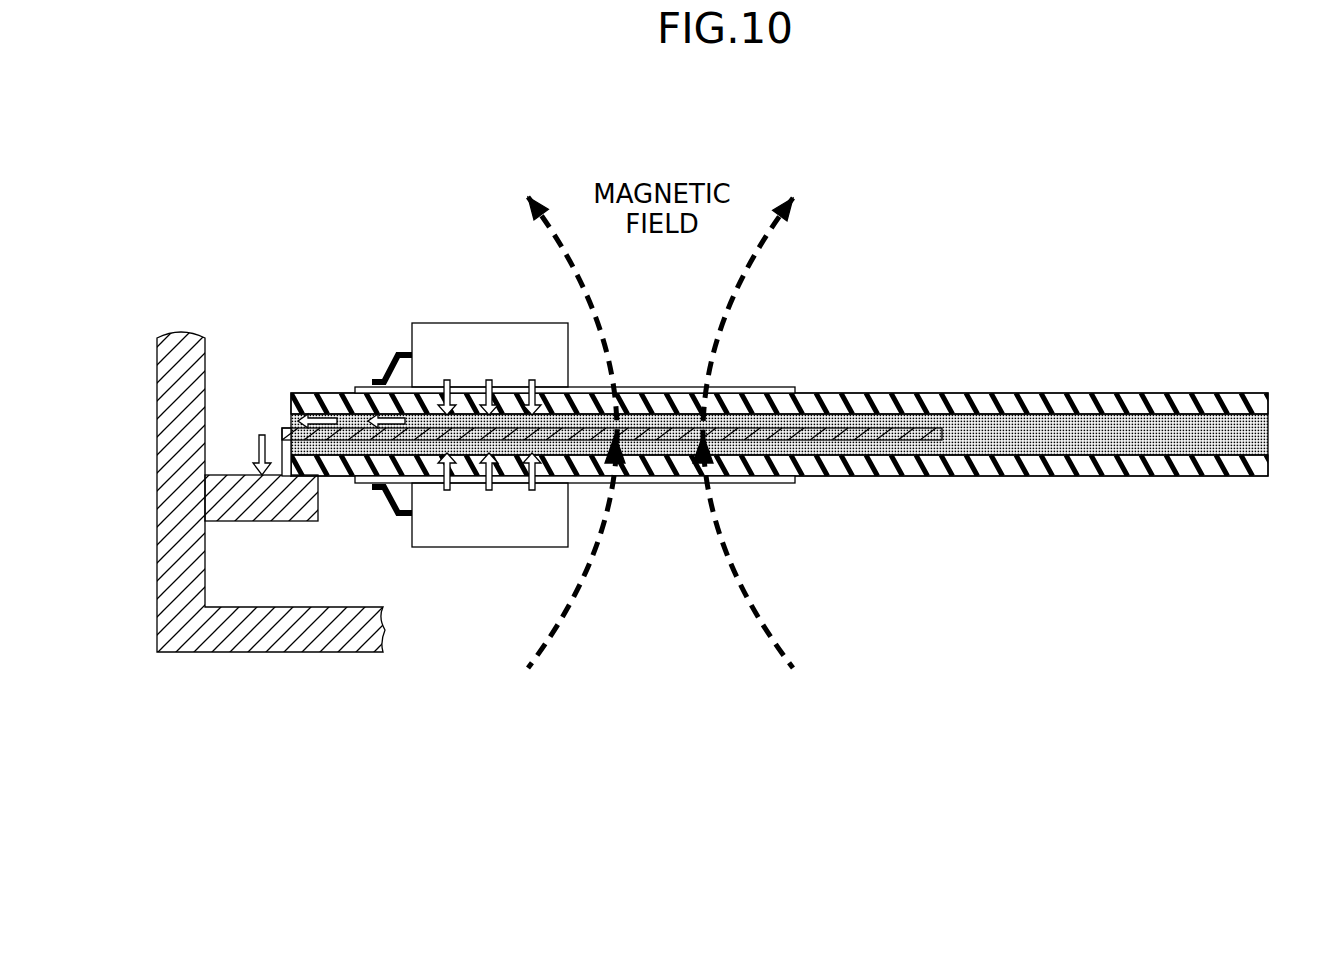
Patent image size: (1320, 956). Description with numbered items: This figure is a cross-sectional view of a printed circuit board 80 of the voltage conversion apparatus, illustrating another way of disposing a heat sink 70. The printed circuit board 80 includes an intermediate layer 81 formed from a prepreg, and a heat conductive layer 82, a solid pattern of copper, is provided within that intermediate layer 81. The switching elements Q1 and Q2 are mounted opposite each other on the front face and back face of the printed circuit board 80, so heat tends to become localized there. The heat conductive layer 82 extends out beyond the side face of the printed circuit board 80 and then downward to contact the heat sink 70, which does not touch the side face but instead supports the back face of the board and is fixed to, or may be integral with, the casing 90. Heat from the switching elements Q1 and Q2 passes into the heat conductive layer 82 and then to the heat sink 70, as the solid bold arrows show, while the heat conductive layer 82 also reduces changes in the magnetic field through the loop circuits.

The heat sink 70 is at (282, 533).
The printed circuit board 80 is at (775, 386).
The intermediate layer 81 is at (969, 415).
The heat conductive layer 82 is at (809, 415).
The casing 90 is at (290, 653).
The switching element Q1 is at (492, 323).
The switching element Q2 is at (492, 547).